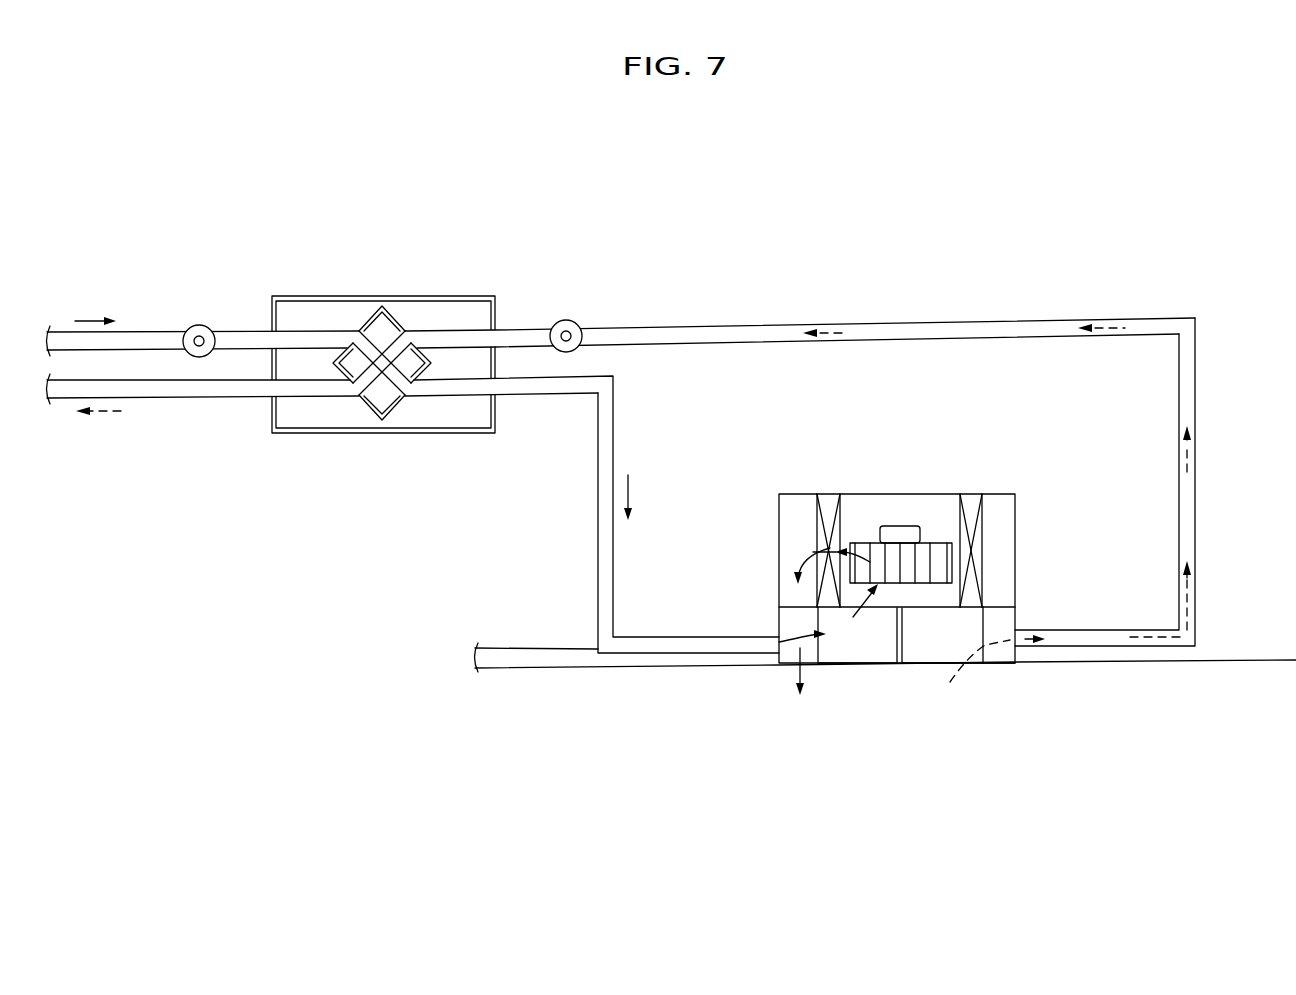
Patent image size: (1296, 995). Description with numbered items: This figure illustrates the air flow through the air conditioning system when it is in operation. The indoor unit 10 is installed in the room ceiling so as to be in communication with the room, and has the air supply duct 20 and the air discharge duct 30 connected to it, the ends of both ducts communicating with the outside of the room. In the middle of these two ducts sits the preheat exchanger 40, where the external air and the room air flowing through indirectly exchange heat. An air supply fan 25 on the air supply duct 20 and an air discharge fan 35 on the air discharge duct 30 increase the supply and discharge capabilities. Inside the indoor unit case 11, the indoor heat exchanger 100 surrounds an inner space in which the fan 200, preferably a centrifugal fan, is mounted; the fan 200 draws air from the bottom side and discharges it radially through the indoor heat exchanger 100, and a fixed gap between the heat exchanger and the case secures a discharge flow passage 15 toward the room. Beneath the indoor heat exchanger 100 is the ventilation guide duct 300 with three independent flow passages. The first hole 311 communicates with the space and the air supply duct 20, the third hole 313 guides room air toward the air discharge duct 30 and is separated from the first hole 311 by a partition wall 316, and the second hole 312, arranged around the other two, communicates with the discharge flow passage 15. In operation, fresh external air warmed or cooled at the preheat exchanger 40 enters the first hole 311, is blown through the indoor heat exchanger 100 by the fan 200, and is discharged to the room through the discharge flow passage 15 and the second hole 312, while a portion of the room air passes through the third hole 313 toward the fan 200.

The indoor unit 10 is at (916, 588).
The indoor unit case 11 is at (778, 528).
The discharge flow passage 15 is at (790, 550).
The air supply duct 20 is at (597, 551).
The air supply fan 25 is at (199, 325).
The air discharge duct 30 is at (1197, 405).
The air discharge fan 35 is at (566, 320).
The preheat exchanger 40 is at (347, 290).
The indoor heat exchanger 100 is at (975, 550).
The fan 200 is at (925, 555).
The ventilation guide duct 300 is at (1028, 612).
The first hole 311 is at (875, 655).
The second hole 312 is at (1000, 655).
The third hole 313 is at (920, 652).
The partition wall 316 is at (895, 620).